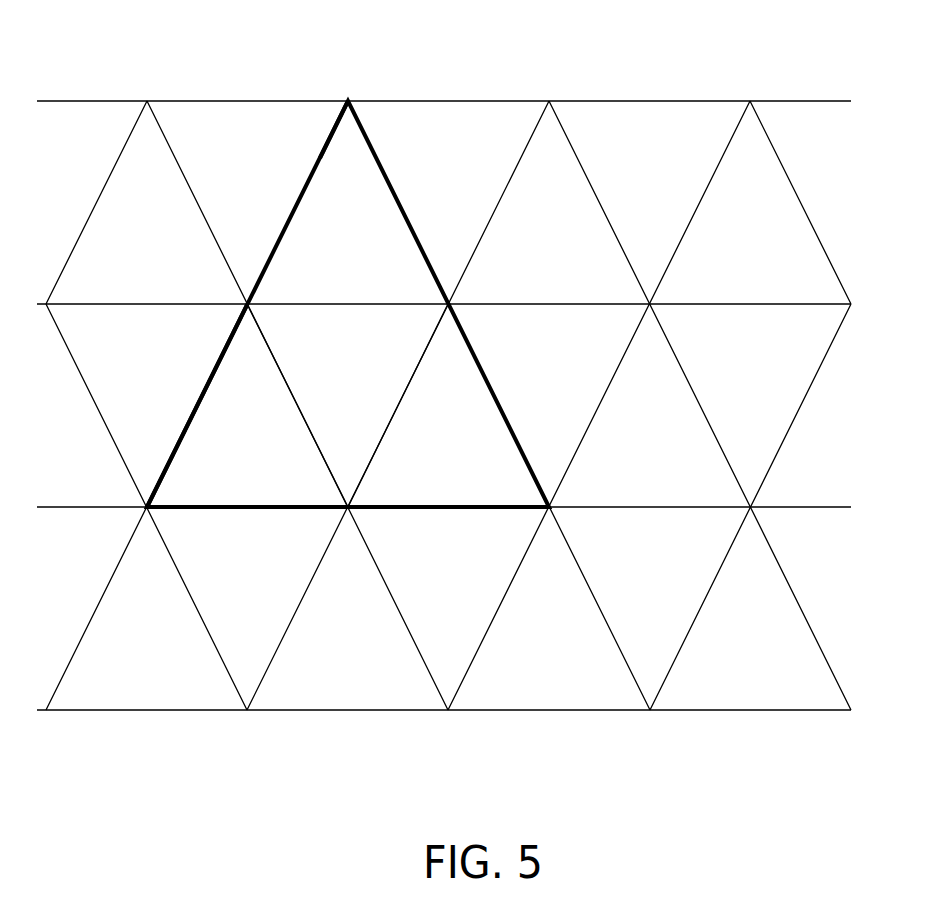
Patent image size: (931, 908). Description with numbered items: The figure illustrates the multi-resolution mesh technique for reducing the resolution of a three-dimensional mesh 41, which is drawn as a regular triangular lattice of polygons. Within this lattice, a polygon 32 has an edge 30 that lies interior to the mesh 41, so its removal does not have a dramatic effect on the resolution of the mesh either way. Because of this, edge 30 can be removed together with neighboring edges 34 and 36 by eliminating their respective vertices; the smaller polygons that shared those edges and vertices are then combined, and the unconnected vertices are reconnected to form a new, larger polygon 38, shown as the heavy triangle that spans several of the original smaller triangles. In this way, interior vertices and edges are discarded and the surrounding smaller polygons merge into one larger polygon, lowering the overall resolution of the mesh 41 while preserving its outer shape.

The 3D mesh 41 is at (514, 62).
The edge 30 is at (404, 218).
The polygon 32 is at (343, 152).
The larger polygon 38 is at (201, 389).
The edge 34 is at (278, 371).
The edge 36 is at (401, 403).